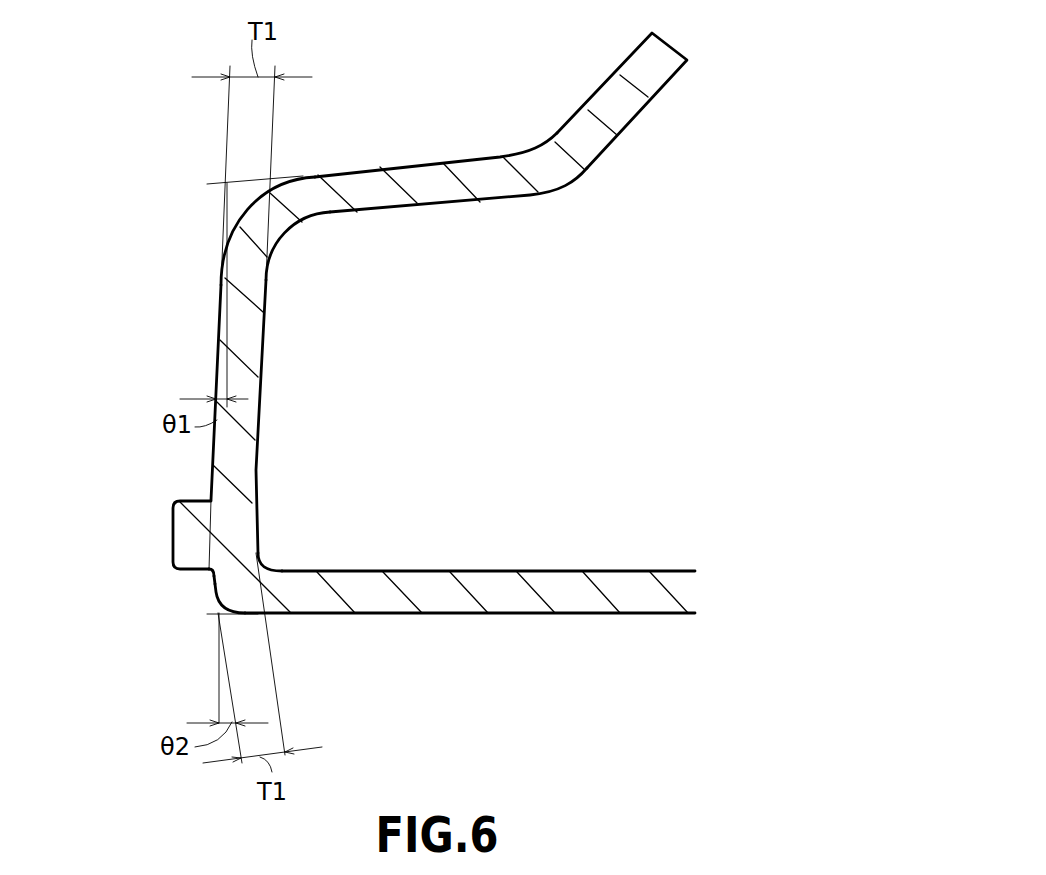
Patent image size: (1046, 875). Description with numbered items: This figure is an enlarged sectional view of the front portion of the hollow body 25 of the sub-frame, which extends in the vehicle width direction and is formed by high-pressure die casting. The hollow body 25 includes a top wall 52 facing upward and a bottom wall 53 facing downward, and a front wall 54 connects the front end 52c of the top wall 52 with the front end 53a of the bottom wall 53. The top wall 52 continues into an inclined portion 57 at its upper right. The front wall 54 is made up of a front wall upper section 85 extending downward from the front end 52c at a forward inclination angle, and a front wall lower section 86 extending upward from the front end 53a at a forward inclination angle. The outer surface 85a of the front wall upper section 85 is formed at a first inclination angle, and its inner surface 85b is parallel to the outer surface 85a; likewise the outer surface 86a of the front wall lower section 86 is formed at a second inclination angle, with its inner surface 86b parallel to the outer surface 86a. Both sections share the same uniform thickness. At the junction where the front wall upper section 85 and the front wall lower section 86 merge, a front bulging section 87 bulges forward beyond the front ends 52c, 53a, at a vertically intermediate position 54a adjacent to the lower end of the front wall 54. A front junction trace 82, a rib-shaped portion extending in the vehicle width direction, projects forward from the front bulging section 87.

The hollow body 25 is at (165, 125).
The top wall 52 is at (430, 163).
The front end of the top wall 52c is at (260, 197).
The bottom wall 53 is at (497, 615).
The front end of the bottom wall 53a is at (290, 618).
The front wall 54 is at (212, 447).
The position adjacent to the lower end of the front wall 54a is at (218, 557).
The inclined flange portion 57 is at (632, 68).
The front junction trace 82 is at (188, 532).
The front wall upper section 85 is at (255, 310).
The outer surface of the front wall upper section 85a is at (218, 330).
The inner surface of the front wall upper section 85b is at (267, 357).
The front wall lower section 86 is at (222, 588).
The outer surface of the front wall lower section 86a is at (212, 590).
The inner surface of the front wall lower section 86b is at (257, 550).
The front bulging section 87 is at (215, 532).